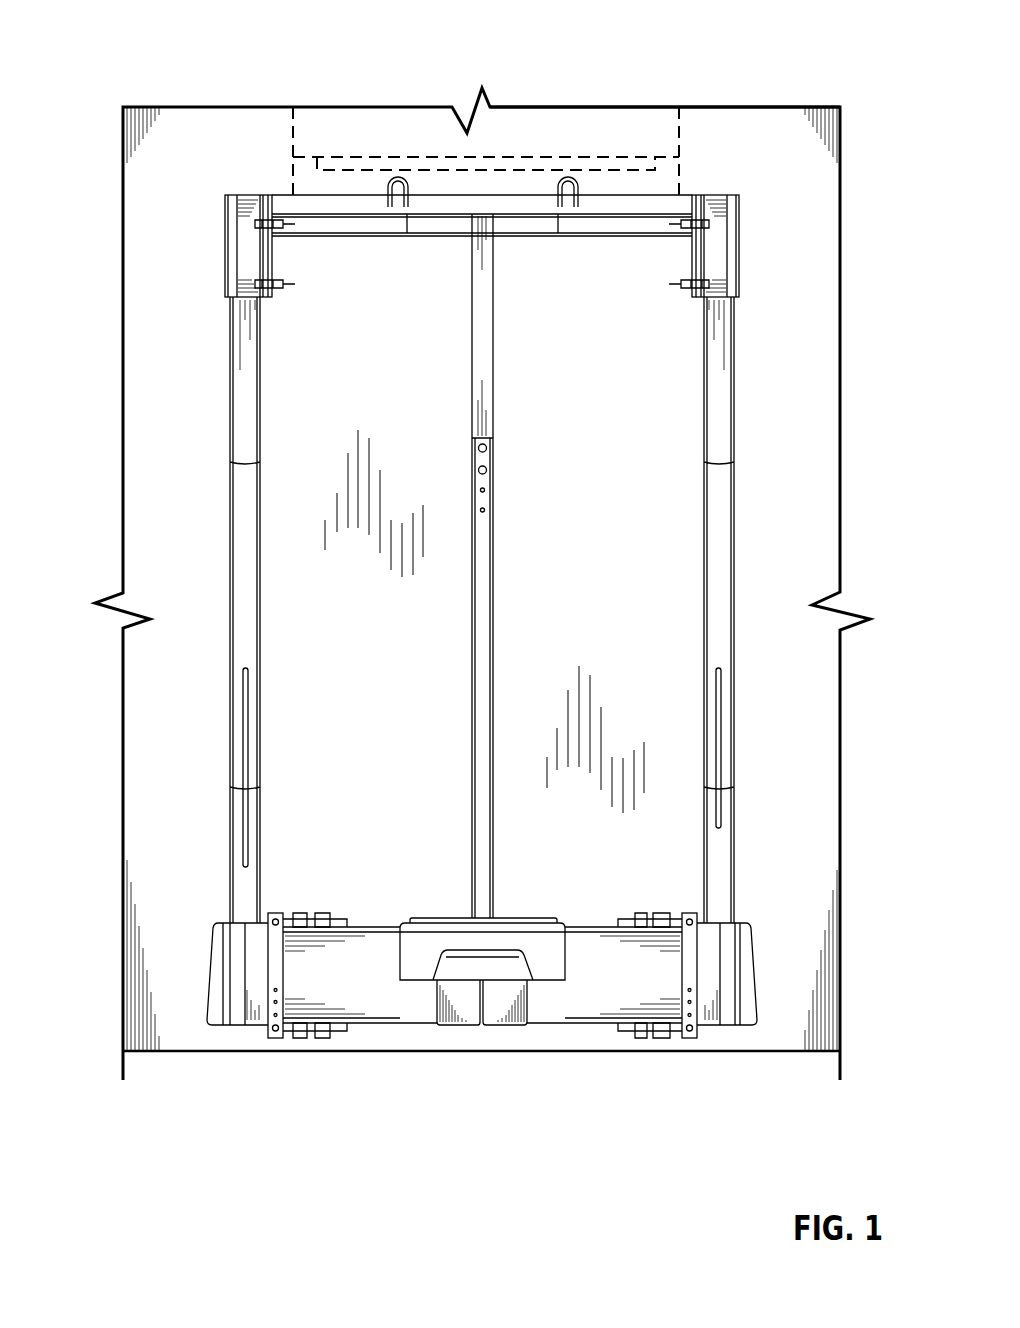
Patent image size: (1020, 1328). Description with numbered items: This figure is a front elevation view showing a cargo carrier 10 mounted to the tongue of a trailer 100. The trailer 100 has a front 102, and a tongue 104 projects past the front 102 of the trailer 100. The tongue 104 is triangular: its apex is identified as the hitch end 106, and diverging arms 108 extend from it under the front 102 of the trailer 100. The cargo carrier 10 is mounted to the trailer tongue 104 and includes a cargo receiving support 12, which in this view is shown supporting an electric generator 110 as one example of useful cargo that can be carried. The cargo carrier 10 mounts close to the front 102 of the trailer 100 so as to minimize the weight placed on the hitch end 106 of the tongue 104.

The trailer 100 is at (168, 137).
The cargo carrier 10 is at (258, 165).
The cargo receiving support 12 is at (607, 192).
The electric generator 110 is at (683, 138).
The front 102 is at (655, 567).
The tongue 104 is at (391, 1027).
The hitch end 106 is at (480, 962).
The diverging arms 108 is at (375, 988).